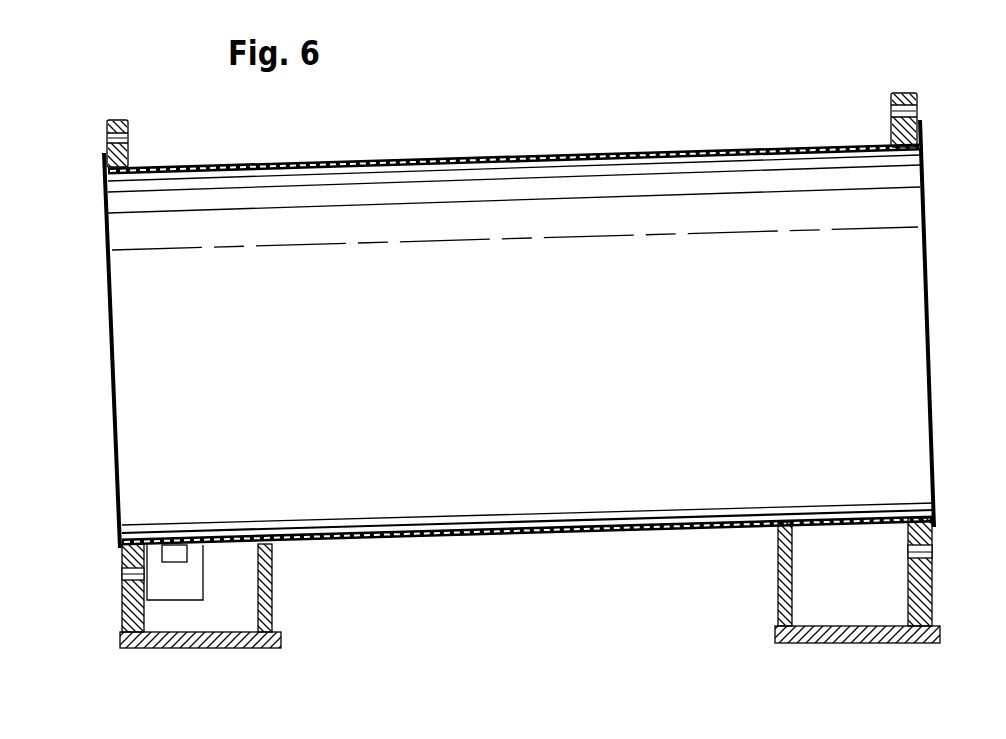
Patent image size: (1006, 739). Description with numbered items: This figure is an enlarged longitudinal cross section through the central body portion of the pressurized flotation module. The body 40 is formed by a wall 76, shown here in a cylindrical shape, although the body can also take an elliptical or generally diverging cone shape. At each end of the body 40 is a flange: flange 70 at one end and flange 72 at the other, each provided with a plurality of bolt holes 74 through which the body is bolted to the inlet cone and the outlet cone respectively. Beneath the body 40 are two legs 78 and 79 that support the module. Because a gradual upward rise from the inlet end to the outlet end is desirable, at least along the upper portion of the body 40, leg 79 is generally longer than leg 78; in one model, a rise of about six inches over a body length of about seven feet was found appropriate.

The body 40 is at (490, 152).
The flange 70 is at (118, 127).
The flange 72 is at (900, 98).
The bolt holes 74 is at (112, 138).
The wall 76 is at (505, 540).
The leg 78 is at (274, 618).
The leg 79 is at (780, 612).